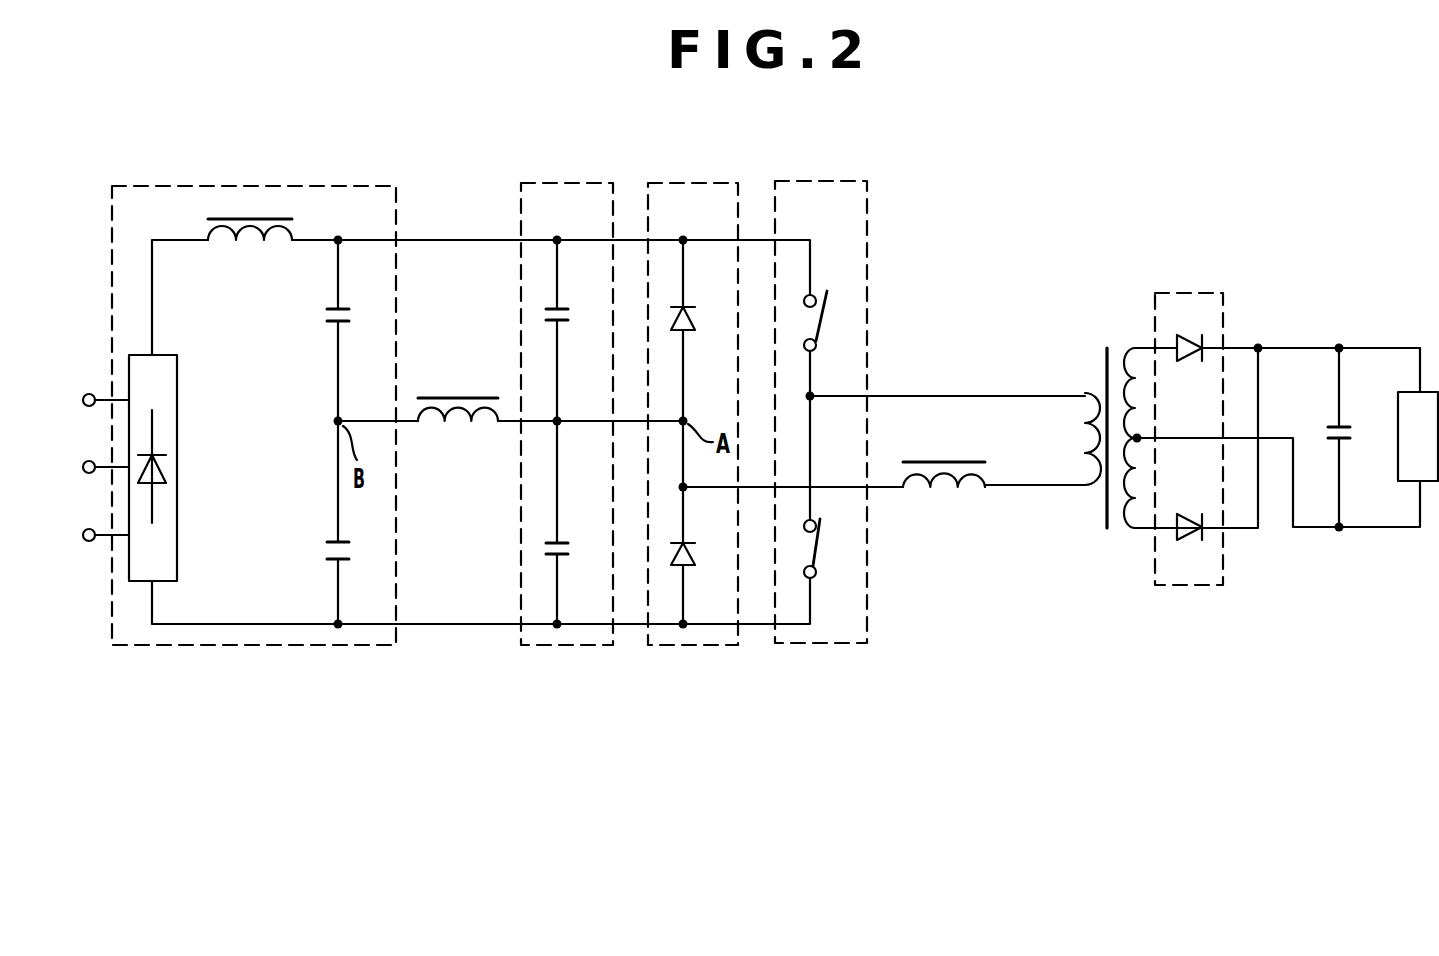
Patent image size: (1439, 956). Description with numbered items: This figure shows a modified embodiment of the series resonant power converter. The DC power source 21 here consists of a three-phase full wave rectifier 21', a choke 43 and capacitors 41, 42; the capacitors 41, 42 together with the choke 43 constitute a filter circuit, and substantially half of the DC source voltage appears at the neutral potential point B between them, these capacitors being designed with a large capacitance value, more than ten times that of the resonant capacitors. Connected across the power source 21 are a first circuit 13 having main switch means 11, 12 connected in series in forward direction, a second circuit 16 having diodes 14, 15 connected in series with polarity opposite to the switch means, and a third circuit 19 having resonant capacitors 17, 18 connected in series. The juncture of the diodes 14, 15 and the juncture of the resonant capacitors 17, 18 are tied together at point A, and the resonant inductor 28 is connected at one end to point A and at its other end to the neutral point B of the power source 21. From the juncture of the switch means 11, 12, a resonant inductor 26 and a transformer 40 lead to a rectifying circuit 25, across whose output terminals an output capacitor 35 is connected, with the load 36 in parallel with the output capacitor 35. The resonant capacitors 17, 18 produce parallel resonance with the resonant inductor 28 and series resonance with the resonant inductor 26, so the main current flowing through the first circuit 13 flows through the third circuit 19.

The DC power source 21 is at (254, 380).
The three-phase full wave rectifier 21' is at (182, 468).
The choke 43 is at (251, 249).
The capacitor 41 is at (358, 318).
The capacitor 42 is at (358, 556).
The resonant inductor 28 is at (481, 428).
The third circuit 19 is at (541, 183).
The resonant capacitor 17 is at (577, 316).
The resonant capacitor 18 is at (571, 548).
The second circuit 16 is at (662, 183).
The diode 14 is at (698, 325).
The diode 15 is at (697, 562).
The first circuit 13 is at (790, 181).
The main switch means 11 is at (826, 312).
The main switch means 12 is at (826, 545).
The resonant inductor 26 is at (968, 492).
The transformer 40 is at (1101, 374).
The rectifying circuit 25 is at (1206, 293).
The output capacitor 35 is at (1322, 430).
The load 36 is at (1398, 415).